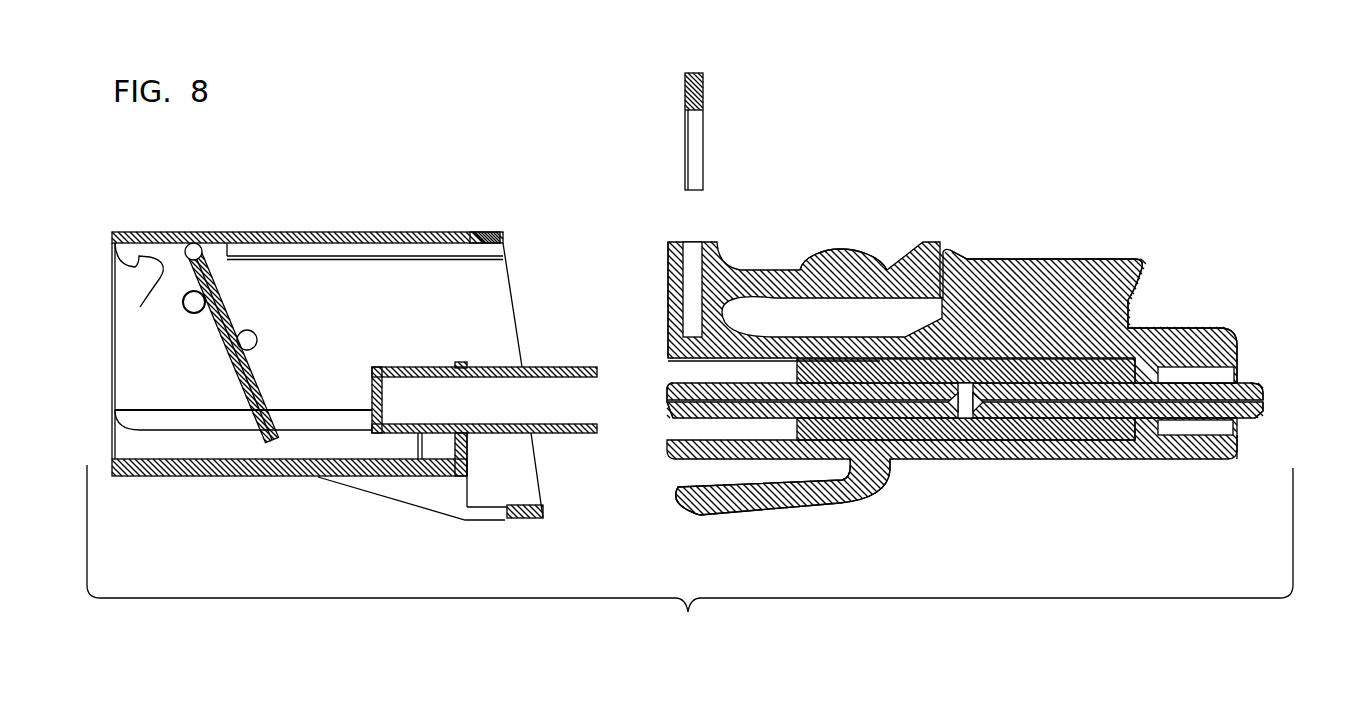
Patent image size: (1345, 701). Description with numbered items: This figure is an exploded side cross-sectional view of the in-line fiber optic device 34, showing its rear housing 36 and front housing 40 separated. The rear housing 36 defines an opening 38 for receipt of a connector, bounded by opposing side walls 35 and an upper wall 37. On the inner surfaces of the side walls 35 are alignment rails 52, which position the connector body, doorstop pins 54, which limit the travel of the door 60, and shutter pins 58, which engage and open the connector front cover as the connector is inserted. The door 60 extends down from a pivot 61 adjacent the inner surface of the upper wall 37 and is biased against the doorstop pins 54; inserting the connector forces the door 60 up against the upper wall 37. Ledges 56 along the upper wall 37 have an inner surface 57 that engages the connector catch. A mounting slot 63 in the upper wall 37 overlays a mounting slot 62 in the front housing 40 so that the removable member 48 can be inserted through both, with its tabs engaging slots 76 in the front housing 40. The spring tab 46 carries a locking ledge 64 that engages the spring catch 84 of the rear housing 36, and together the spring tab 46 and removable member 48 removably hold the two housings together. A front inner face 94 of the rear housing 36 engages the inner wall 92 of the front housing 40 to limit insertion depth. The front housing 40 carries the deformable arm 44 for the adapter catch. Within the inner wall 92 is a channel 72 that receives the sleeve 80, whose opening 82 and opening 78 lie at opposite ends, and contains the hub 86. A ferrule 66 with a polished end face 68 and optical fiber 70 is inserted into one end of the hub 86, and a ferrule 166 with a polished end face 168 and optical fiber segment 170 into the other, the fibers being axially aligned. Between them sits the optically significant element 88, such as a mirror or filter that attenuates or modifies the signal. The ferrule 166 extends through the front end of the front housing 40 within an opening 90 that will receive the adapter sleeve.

The in-line fiber optic device 34 is at (690, 556).
The opposing side walls 35 is at (388, 306).
The rear housing 36 is at (283, 203).
The upper wall 37 is at (227, 231).
The opening 38 is at (150, 358).
The front housing 40 is at (1050, 238).
The deformable arm 44 is at (843, 252).
The spring tab 46 is at (773, 500).
The removable member 48 is at (702, 95).
The alignment rails 52 is at (130, 418).
The doorstop pins 54 is at (196, 311).
The ledges 56 is at (132, 255).
The inner surface 57 is at (141, 295).
The shutter pins 58 is at (252, 333).
The door 60 is at (247, 373).
The pivot 61 is at (192, 243).
The mounting slot 62 is at (695, 247).
The mounting slot 63 is at (475, 232).
The locking ledge 64 is at (702, 511).
The ferrule 66 is at (713, 382).
The polished end face 68 is at (667, 394).
The optical fiber 70 is at (669, 408).
The channel 72 is at (700, 427).
The slots 76 is at (688, 300).
The opening 78 is at (570, 408).
The sleeve 80 is at (540, 367).
The opening 82 is at (393, 398).
The spring catch 84 is at (503, 508).
The hub 86 is at (1003, 430).
The optically significant element 88 is at (972, 383).
The opening 90 is at (1225, 375).
The inner wall 92 is at (668, 313).
The front inner face 94 is at (466, 366).
The ferrule 166 is at (1238, 413).
The polished end face 168 is at (1253, 400).
The optical fiber segment 170 is at (1255, 410).